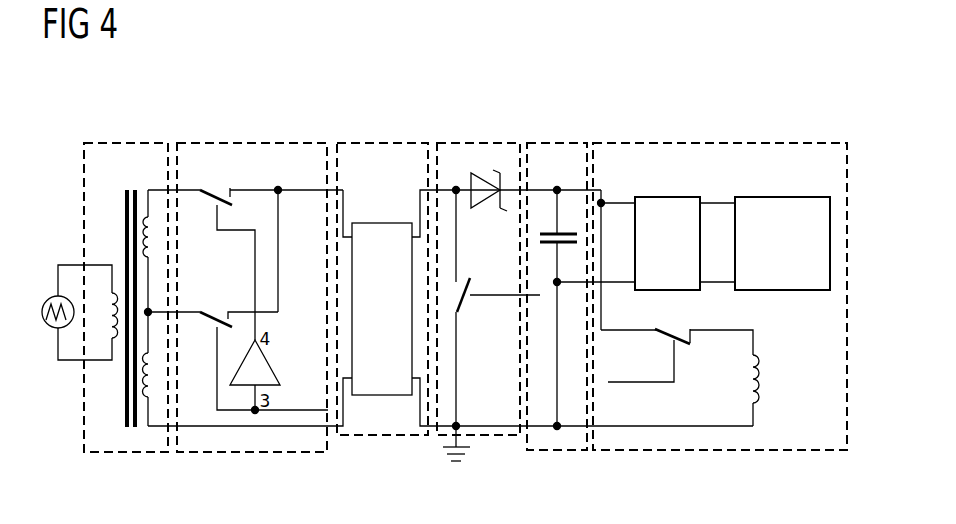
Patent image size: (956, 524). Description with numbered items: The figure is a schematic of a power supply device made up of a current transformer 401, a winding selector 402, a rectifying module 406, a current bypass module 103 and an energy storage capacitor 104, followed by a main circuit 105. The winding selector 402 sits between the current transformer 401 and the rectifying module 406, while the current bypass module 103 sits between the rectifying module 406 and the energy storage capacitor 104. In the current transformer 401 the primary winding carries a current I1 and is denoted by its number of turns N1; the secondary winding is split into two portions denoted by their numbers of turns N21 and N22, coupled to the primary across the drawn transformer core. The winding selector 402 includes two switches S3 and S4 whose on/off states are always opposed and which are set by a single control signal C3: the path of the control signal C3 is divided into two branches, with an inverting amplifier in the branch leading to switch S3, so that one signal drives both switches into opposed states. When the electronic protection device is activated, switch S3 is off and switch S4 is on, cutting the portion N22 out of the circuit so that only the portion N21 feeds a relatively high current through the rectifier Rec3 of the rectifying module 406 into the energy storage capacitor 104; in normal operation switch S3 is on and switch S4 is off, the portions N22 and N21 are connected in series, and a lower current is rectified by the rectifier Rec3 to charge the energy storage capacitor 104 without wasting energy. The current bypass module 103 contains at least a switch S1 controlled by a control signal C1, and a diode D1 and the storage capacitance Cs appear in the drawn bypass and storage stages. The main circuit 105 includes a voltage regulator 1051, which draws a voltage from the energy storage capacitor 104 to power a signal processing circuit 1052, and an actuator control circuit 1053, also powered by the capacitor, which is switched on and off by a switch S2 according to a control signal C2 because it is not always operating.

The current transformer 401 is at (117, 143).
The winding selector 402 is at (203, 143).
The rectifying module 406 is at (377, 143).
The current bypass module 103 is at (447, 143).
The energy storage capacitor 104 is at (562, 143).
The main circuit 105 is at (716, 143).
The voltage regulator 1051 is at (657, 197).
The signal processing circuit 1052 is at (777, 197).
The actuator control circuit 1053 is at (762, 372).
The primary winding current I1 is at (58, 296).
The primary winding N1 is at (118, 292).
The secondary winding portion N22 is at (147, 217).
The secondary winding portion N21 is at (148, 400).
The switch S3 is at (222, 200).
The switch S4 is at (212, 312).
The control signal C3 is at (291, 399).
The rectifier 3 Rec3 is at (392, 395).
The diode D1 is at (478, 172).
The switch S1 is at (460, 308).
The control signal C1 is at (505, 278).
The storage capacitor Cs is at (548, 234).
The switch S2 is at (680, 342).
The control signal C2 is at (641, 362).